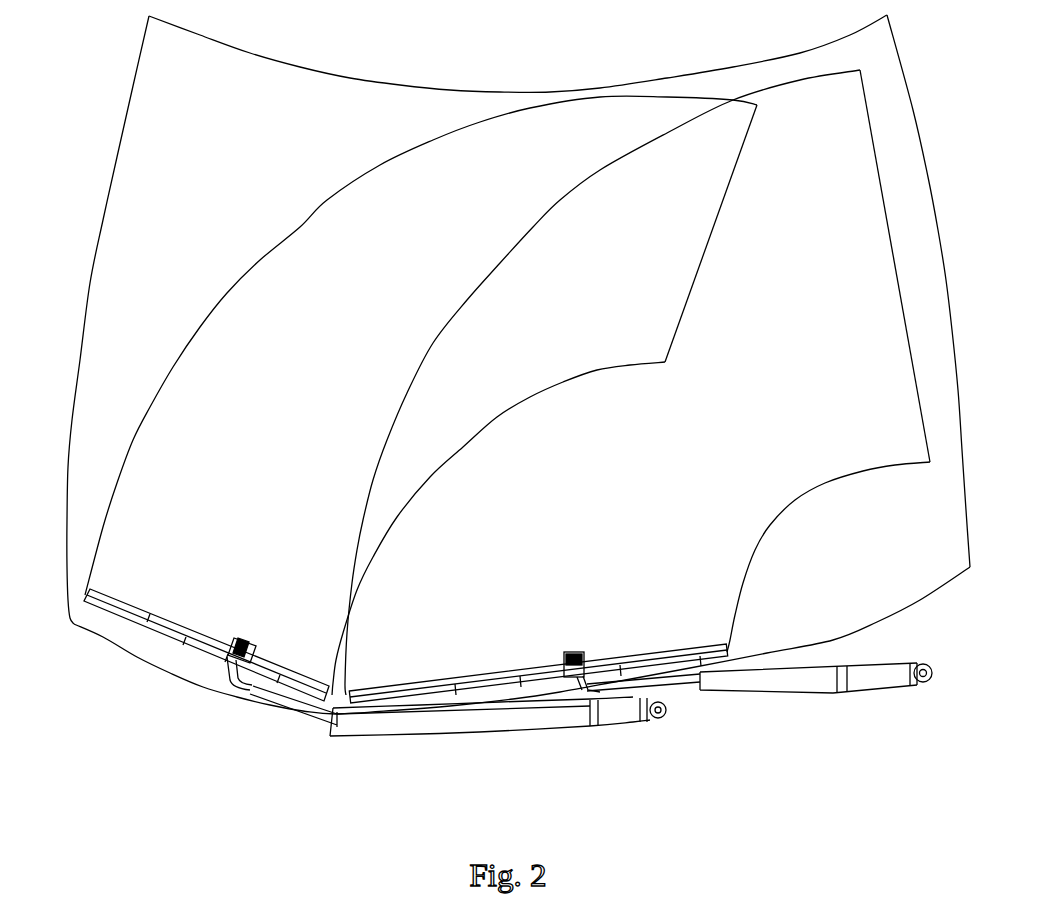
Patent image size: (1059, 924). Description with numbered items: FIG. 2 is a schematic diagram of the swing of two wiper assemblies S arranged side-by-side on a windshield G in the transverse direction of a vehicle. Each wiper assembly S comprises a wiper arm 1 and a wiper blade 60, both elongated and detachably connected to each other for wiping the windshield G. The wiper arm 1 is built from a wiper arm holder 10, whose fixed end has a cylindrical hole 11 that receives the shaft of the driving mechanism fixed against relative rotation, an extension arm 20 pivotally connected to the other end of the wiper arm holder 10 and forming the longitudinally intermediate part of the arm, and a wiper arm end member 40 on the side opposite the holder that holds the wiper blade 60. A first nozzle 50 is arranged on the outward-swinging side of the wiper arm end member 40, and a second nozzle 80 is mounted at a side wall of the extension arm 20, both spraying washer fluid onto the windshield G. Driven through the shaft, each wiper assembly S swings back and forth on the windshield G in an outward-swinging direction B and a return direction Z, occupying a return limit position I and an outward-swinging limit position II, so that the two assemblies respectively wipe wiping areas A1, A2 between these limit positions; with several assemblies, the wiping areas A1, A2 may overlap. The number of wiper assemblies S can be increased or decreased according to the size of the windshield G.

The windshield G is at (140, 167).
The wiping area A1 is at (340, 215).
The wiping area A2 is at (808, 480).
The outward-swinging limit position II is at (700, 262).
The outward-swinging direction B is at (143, 577).
The return direction Z is at (137, 522).
The return limit position I is at (198, 630).
The wiper arm 1 is at (529, 678).
The wiper arm holder 10 is at (622, 724).
The cylindrical hole 11 is at (659, 720).
The extension arm 20 is at (450, 736).
The wiper arm end member 40 is at (232, 682).
The first nozzle 50 is at (246, 644).
The wiper blade 60 is at (278, 668).
The second nozzle 80 is at (298, 716).
The wiper assembly S is at (330, 743).